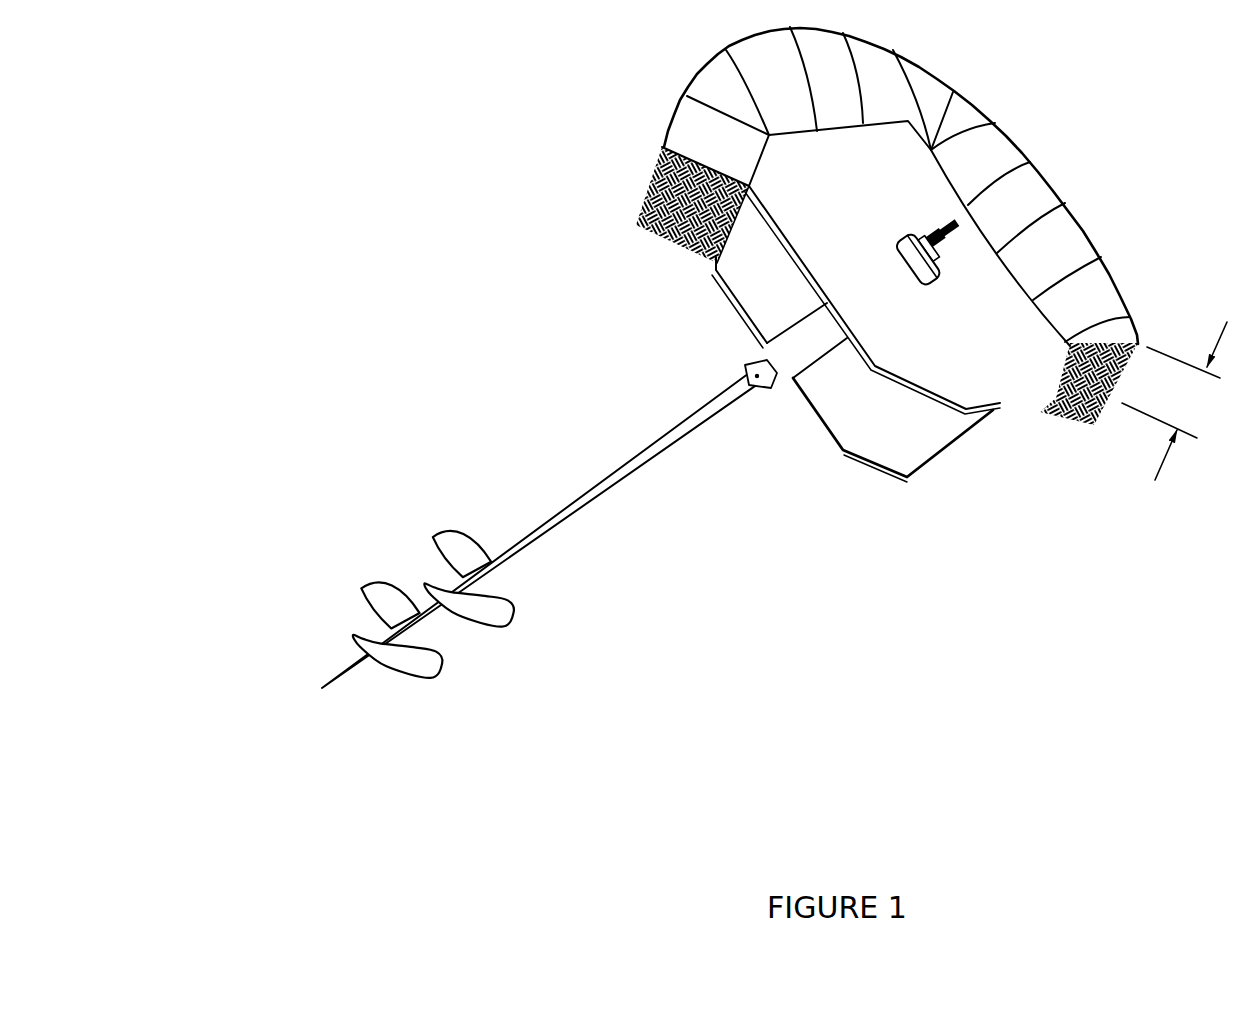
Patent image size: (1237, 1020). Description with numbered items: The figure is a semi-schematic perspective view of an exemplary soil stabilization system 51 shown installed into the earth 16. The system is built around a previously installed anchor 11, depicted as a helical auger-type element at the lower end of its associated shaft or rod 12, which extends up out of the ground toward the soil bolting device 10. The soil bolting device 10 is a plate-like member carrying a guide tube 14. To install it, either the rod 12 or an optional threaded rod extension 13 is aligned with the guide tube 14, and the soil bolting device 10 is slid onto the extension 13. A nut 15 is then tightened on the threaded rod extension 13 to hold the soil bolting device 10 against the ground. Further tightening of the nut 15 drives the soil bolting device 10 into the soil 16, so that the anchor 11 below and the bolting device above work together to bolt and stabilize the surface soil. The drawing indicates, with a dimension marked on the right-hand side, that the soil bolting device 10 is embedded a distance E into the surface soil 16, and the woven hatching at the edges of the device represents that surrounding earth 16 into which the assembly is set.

The soil bolting device 10 is at (937, 356).
The anchor 11 is at (357, 605).
The shaft or rod 12 is at (582, 492).
The threaded rod extension 13 is at (740, 369).
The guide tube 14 is at (937, 277).
The nut 15 is at (938, 230).
The earth (soil) 16 is at (640, 210).
The soil stabilization system 51 is at (688, 560).
The embedment distance E is at (1174, 401).